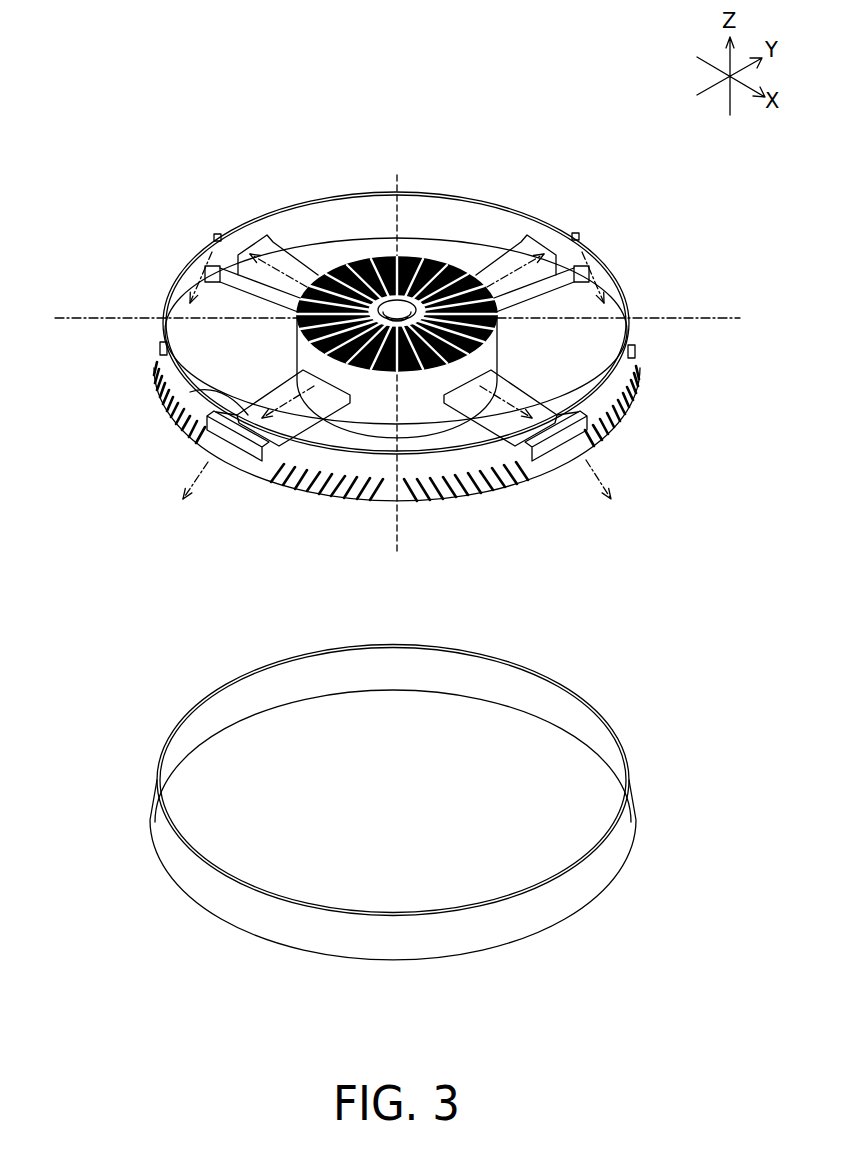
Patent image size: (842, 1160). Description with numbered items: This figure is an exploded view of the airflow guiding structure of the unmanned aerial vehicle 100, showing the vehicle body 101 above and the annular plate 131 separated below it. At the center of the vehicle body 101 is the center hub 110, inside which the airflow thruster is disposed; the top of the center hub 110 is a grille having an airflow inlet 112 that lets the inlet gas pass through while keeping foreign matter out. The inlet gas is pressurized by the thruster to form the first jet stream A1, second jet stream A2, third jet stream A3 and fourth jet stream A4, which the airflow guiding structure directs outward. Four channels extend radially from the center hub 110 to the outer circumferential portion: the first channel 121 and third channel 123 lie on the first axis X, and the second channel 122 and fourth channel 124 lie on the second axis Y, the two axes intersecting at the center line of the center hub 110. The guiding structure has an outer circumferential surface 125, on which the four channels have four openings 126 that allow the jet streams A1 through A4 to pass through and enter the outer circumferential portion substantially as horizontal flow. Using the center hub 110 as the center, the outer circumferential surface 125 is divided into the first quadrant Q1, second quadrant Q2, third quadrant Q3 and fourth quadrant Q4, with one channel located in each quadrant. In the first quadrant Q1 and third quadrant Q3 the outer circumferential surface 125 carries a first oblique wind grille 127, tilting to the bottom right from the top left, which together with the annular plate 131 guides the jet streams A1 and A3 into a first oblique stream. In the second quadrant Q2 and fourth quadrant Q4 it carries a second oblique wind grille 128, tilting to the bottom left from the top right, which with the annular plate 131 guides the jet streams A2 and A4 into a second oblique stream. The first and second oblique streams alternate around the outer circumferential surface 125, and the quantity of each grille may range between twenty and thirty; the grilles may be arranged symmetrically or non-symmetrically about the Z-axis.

The unmanned aerial vehicle 100 is at (82, 36).
The vehicle body 101 is at (125, 157).
The center hub 110 is at (363, 424).
The airflow inlet 112 is at (445, 270).
The first channel 121 is at (238, 253).
The second channel 122 is at (510, 236).
The third channel 123 is at (632, 352).
The fourth channel 124 is at (190, 392).
The outer circumferential surface 125 is at (176, 283).
The openings 126 is at (242, 444).
The first oblique wind grille 127 is at (230, 216).
The second oblique wind grille 128 is at (586, 234).
The annular plate 131 is at (173, 731).
The first jet stream A1 is at (284, 268).
The second jet stream A2 is at (590, 264).
The third jet stream A3 is at (558, 420).
The fourth jet stream A4 is at (285, 402).
The first quadrant Q1 is at (377, 170).
The second quadrant Q2 is at (416, 170).
The third quadrant Q3 is at (418, 521).
The fourth quadrant Q4 is at (380, 521).